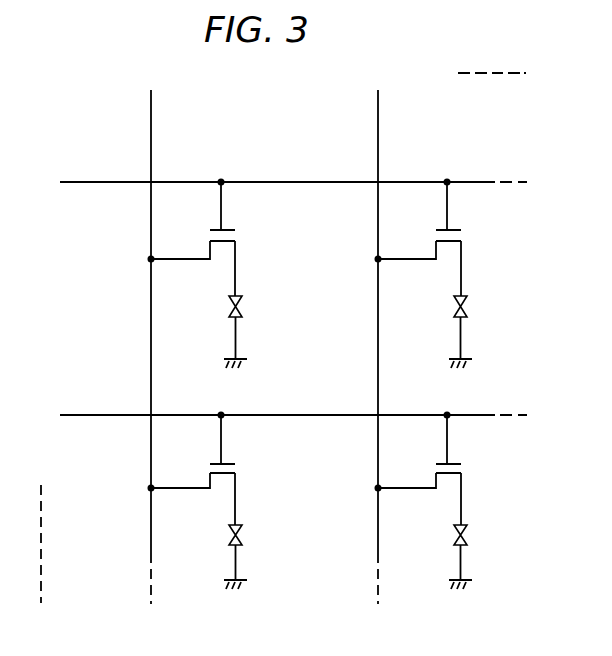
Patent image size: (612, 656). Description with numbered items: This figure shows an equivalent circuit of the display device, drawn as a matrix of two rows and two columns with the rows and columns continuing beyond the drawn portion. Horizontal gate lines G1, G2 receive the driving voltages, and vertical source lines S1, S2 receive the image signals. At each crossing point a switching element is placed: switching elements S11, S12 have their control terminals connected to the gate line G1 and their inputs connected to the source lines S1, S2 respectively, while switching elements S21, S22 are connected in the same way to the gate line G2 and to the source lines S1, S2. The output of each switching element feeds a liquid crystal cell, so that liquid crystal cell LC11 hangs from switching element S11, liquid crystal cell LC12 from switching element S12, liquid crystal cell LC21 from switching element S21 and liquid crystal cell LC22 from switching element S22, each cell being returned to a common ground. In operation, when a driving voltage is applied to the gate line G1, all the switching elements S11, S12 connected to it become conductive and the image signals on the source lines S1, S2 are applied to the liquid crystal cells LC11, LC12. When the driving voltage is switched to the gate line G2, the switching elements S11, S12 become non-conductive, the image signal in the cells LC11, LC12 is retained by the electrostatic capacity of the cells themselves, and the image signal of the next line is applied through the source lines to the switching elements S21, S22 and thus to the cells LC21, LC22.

The source line S1 is at (151, 333).
The source line S2 is at (378, 333).
The gate line G1 is at (279, 180).
The gate line G2 is at (279, 413).
The switching element S11 is at (211, 238).
The switching element S12 is at (436, 238).
The switching element S21 is at (211, 469).
The switching element S22 is at (436, 469).
The liquid crystal cell LC11 is at (256, 332).
The liquid crystal cell LC12 is at (481, 332).
The liquid crystal cell LC21 is at (256, 556).
The liquid crystal cell LC22 is at (481, 556).